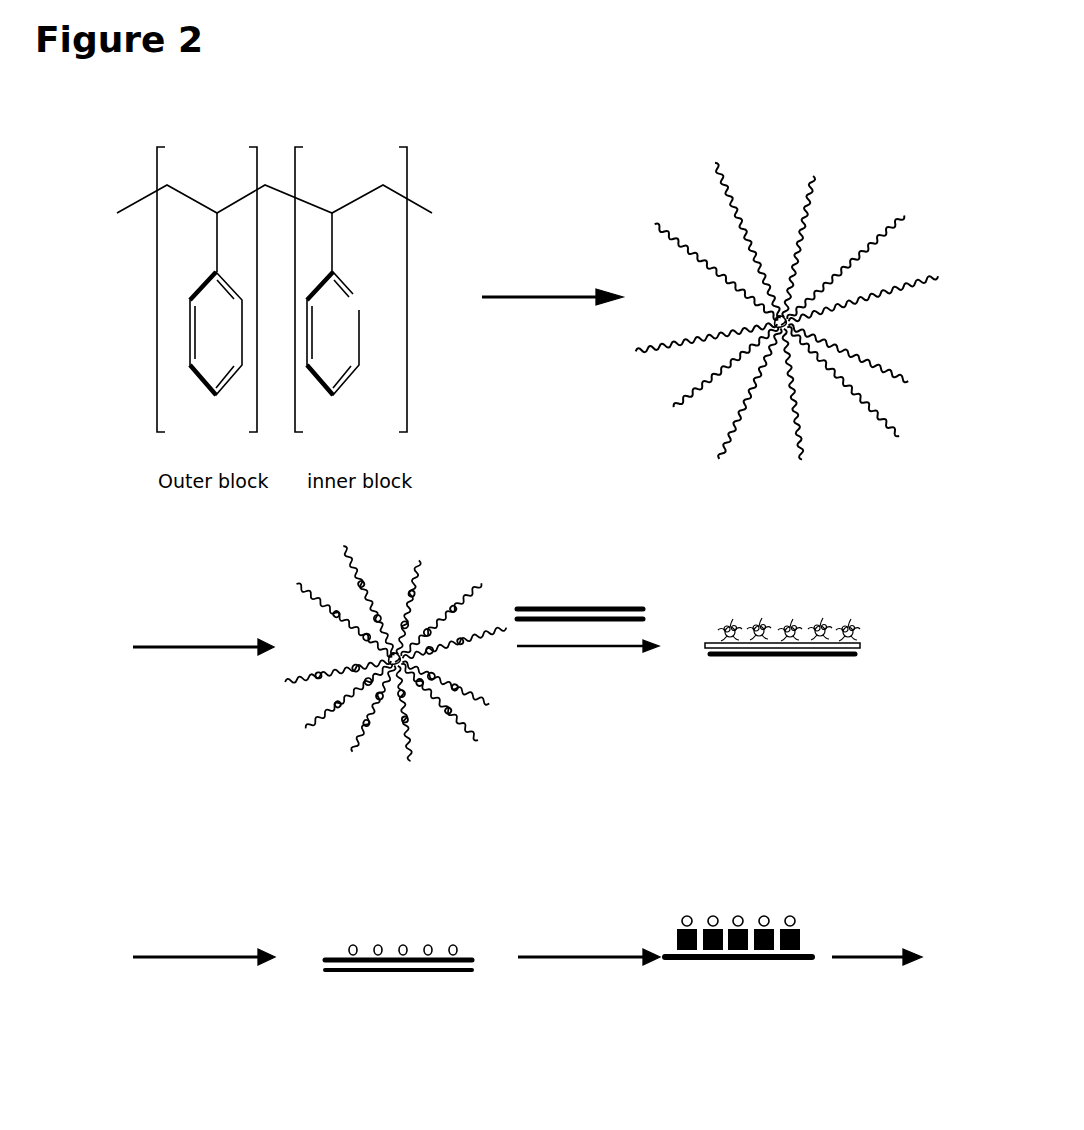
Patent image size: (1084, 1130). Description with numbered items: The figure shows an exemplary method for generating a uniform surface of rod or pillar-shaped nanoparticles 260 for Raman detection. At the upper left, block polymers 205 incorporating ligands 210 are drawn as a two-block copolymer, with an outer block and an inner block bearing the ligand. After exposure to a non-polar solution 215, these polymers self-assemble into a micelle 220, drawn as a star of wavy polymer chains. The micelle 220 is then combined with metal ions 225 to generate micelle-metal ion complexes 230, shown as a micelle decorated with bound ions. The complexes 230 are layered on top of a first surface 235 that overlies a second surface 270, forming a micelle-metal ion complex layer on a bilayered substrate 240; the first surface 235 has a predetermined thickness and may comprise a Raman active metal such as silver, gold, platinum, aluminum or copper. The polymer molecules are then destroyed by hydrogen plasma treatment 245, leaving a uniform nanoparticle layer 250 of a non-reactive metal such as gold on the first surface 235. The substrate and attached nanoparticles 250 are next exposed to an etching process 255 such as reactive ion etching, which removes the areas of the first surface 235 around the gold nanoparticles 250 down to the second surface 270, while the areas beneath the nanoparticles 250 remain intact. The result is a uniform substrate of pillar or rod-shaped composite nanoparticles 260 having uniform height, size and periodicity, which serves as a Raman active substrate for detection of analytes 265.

The block polymer 205 is at (220, 273).
The ligand 210 is at (366, 273).
The non-polar solution 215 is at (552, 281).
The micelle 220 is at (787, 285).
The metal ions 225 is at (203, 634).
The micelle-metal ion complex 230 is at (395, 688).
The first surface 235 is at (646, 598).
The bilayered substrate 240 is at (782, 667).
The hydrogen plasma treatment 245 is at (204, 934).
The nanoparticle layer 250 is at (398, 984).
The reactive ion etching 255 is at (589, 938).
The rod or pillar-shaped nanoparticle surface 260 is at (738, 967).
The analytes 265 is at (877, 941).
The second surface 270 is at (652, 618).